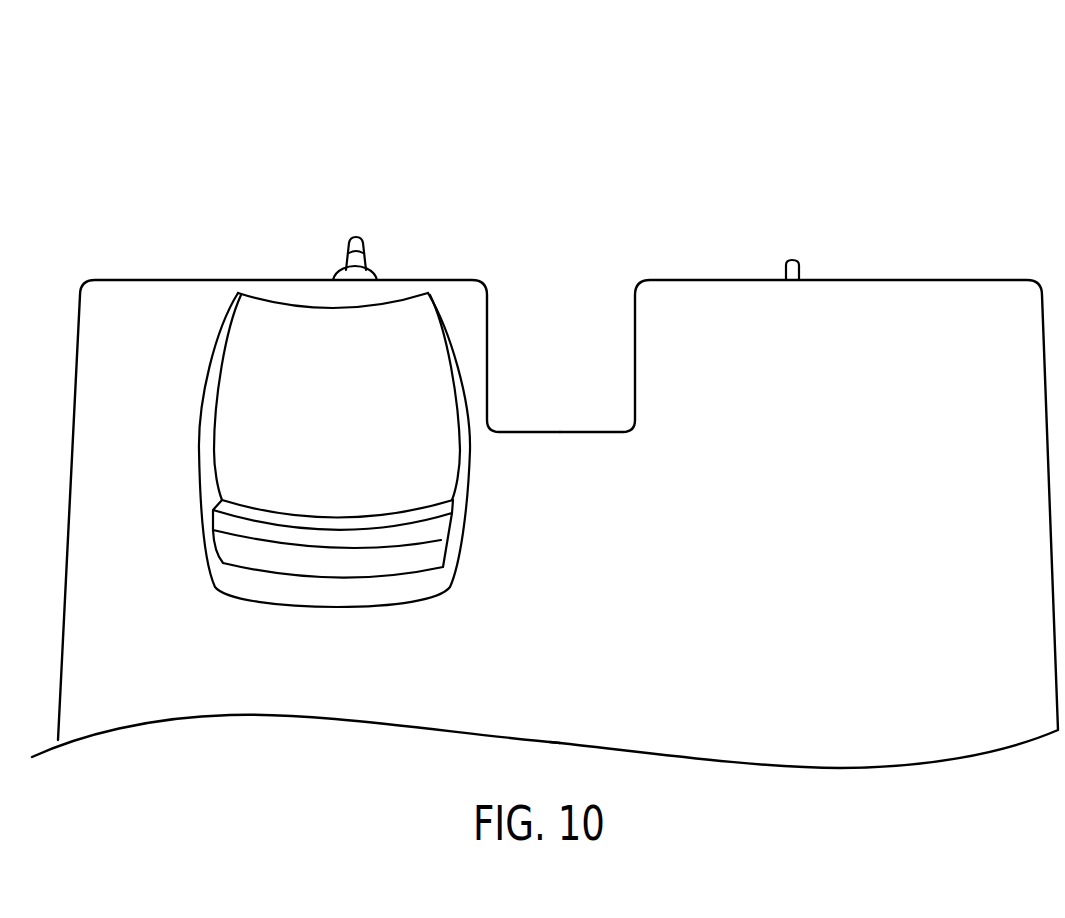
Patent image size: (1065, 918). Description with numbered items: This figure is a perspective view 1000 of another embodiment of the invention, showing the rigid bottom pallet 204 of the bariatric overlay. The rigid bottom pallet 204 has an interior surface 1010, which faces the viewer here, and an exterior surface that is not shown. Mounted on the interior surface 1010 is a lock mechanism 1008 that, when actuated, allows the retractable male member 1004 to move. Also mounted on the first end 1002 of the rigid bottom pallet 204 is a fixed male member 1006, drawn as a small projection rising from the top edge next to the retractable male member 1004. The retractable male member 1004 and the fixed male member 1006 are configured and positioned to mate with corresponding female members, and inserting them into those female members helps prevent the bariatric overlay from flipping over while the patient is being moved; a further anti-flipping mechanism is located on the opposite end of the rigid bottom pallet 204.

The perspective view 1000 is at (992, 120).
The first end 1002 is at (923, 280).
The retractable male member 1004 is at (357, 237).
The fixed male member 1006 is at (793, 260).
The lock mechanism 1008 is at (470, 497).
The interior surface 1010 is at (145, 302).
The rigid bottom pallet 204 is at (795, 563).